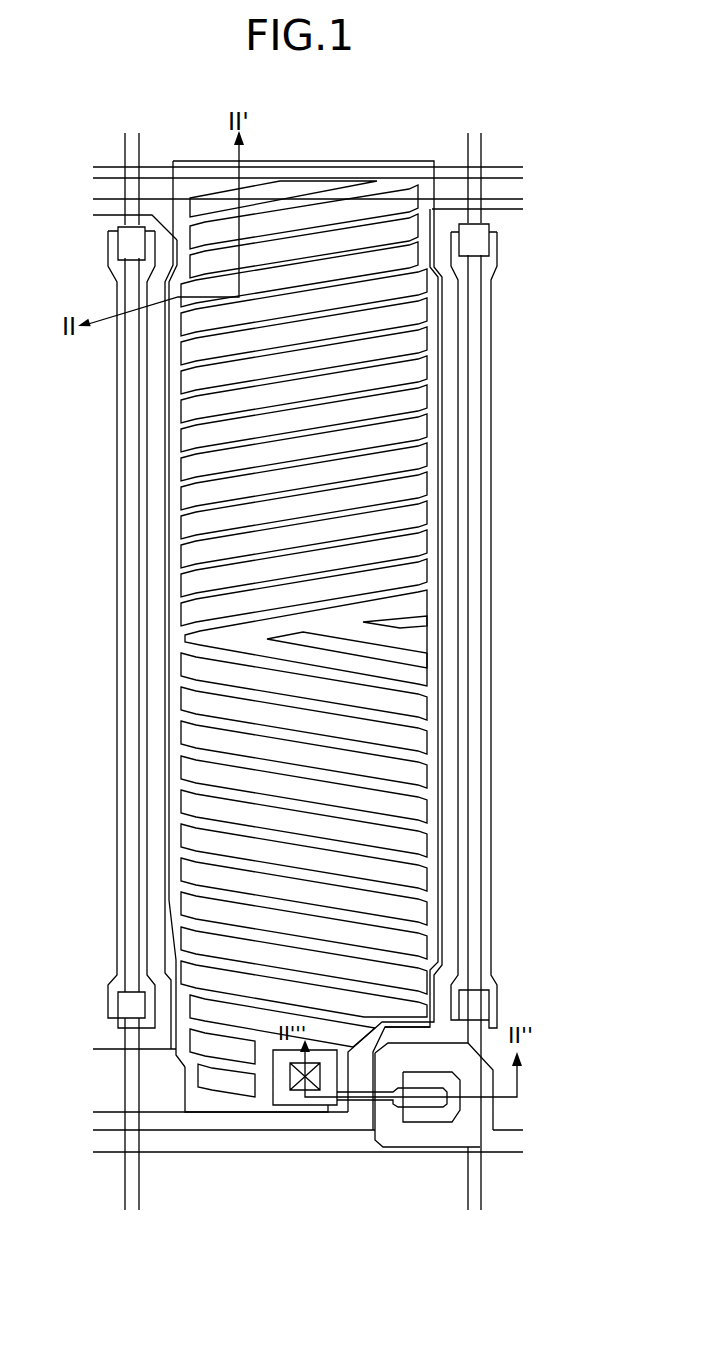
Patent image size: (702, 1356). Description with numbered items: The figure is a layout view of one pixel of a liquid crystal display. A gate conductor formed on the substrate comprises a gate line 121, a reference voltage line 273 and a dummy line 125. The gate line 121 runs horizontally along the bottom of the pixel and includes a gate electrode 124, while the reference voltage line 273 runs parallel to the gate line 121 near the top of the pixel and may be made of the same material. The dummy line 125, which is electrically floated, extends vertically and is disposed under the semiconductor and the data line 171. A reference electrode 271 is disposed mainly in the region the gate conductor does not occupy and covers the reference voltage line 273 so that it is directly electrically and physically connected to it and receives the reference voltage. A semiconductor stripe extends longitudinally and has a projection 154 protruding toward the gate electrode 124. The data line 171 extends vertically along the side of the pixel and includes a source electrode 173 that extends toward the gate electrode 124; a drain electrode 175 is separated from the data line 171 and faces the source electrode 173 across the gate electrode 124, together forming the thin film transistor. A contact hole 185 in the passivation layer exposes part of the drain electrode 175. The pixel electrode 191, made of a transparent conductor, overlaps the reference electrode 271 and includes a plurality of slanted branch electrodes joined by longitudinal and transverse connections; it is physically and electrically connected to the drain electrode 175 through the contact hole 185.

The gate line 121 is at (210, 1153).
The gate electrode 124 is at (345, 1118).
The dummy line 125 is at (493, 347).
The projection 154 is at (383, 1117).
The data line 171 is at (483, 519).
The source electrode 173 is at (434, 1140).
The drain electrode 175 is at (330, 1105).
The contact hole 185 is at (290, 1073).
The pixel electrode 191 is at (165, 790).
The reference electrode 271 is at (160, 1112).
The reference voltage line 273 is at (157, 178).